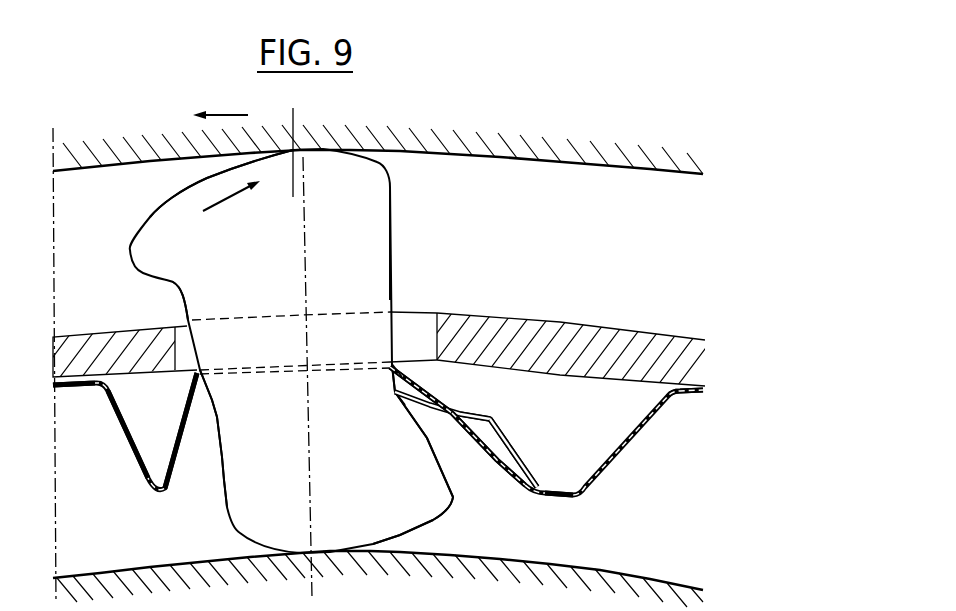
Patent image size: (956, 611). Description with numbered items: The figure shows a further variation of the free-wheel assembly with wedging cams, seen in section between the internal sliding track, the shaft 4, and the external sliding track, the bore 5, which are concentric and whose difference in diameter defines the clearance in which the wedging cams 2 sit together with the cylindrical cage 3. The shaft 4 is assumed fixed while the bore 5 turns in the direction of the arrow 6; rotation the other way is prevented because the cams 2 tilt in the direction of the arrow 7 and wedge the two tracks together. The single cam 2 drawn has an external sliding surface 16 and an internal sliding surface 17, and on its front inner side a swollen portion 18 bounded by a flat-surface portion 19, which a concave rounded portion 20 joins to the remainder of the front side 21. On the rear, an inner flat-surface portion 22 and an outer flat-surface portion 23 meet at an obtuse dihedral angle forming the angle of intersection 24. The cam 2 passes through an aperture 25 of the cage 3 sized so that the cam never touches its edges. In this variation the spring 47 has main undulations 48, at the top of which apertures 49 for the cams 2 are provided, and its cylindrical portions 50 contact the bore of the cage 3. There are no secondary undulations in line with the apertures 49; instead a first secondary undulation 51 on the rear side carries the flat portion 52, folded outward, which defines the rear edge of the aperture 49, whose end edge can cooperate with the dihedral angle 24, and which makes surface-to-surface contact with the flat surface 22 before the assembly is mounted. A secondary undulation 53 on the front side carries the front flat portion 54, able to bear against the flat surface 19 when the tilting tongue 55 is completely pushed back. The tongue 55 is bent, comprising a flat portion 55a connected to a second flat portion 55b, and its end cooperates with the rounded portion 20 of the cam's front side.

The wedging cam 2 is at (400, 262).
The cylindrical cage 3 is at (92, 326).
The shaft 4 is at (518, 562).
The bore 5 is at (470, 156).
The arrow 6 is at (220, 103).
The arrow 7 is at (231, 195).
The external sliding surface 16 is at (147, 222).
The internal sliding surface 17 is at (434, 519).
The swollen portion 18 is at (427, 495).
The flat-surface portion 19 is at (428, 451).
The concave rounded portion 20 is at (392, 390).
The front side 21 is at (391, 225).
The flat-surface portion 22 is at (222, 455).
The flat-surface portion 23 is at (182, 301).
The angle of intersection 24 is at (218, 415).
The aperture 25 is at (402, 327).
The spring 47 is at (95, 396).
The main undulation 48 is at (506, 453).
The aperture 49 is at (394, 371).
The cylindrical portion 50 is at (80, 388).
The first secondary undulation 51 is at (124, 454).
The flat portion 52 is at (186, 414).
The secondary undulation 53 is at (553, 504).
The front flat portion 54 is at (487, 414).
The tilting tongue 55 is at (507, 422).
The flat portion 55a is at (458, 412).
The second flat portion 55b is at (527, 470).